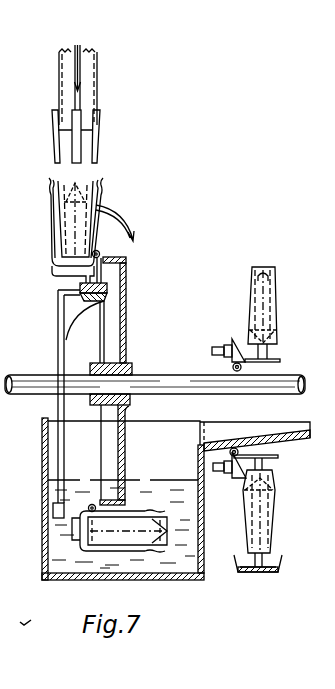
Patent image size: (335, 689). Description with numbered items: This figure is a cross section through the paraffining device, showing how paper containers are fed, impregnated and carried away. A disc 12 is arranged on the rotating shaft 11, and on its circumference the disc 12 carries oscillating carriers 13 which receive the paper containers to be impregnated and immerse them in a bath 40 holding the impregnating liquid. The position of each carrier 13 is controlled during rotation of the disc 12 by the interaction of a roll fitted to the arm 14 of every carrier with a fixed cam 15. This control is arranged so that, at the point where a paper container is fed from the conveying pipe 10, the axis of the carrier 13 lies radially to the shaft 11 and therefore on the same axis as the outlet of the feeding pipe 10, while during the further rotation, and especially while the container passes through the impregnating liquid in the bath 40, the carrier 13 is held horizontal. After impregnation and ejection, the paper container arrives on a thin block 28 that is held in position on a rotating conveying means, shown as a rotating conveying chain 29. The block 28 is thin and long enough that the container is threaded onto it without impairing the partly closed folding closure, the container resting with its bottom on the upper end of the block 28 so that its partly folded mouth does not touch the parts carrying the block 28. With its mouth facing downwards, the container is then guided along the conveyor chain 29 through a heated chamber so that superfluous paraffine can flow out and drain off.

The feeding pipe 10 is at (80, 100).
The rotating shaft 11 is at (270, 381).
The disc 12 is at (127, 300).
The carrier 13 is at (50, 211).
The arm 14 is at (80, 281).
The fixed cam 15 is at (70, 300).
The thin block 28 is at (267, 357).
The conveying chain 29 is at (214, 351).
The bath 40 is at (42, 552).